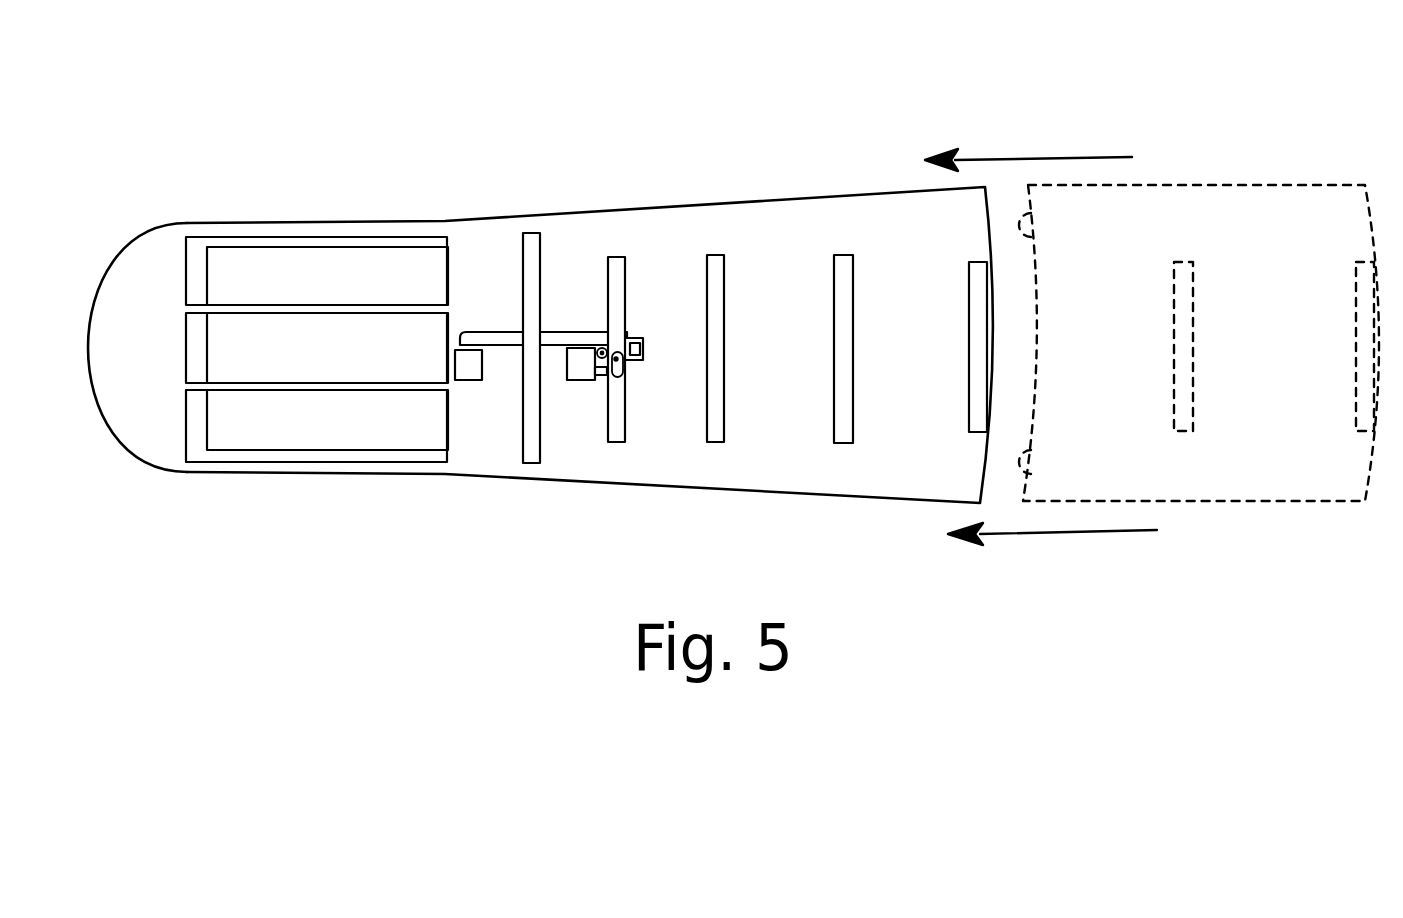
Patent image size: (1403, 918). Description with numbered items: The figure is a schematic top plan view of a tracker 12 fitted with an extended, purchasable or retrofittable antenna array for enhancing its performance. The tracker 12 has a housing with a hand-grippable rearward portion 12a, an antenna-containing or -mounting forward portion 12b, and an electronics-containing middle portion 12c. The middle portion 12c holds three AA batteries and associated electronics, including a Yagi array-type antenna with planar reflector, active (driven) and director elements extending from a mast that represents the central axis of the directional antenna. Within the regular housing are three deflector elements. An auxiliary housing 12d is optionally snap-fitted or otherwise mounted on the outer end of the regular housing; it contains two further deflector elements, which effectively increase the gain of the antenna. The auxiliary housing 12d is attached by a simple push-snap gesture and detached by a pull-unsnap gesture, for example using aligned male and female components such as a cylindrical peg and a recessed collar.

The tracker 12 is at (727, 313).
The hand-grippable rearward portion 12a is at (157, 237).
The antenna-containing or -mounting forward portion 12b is at (855, 195).
The electronics-containing middle portion 12c is at (445, 220).
The auxiliary housing 12d is at (1223, 505).